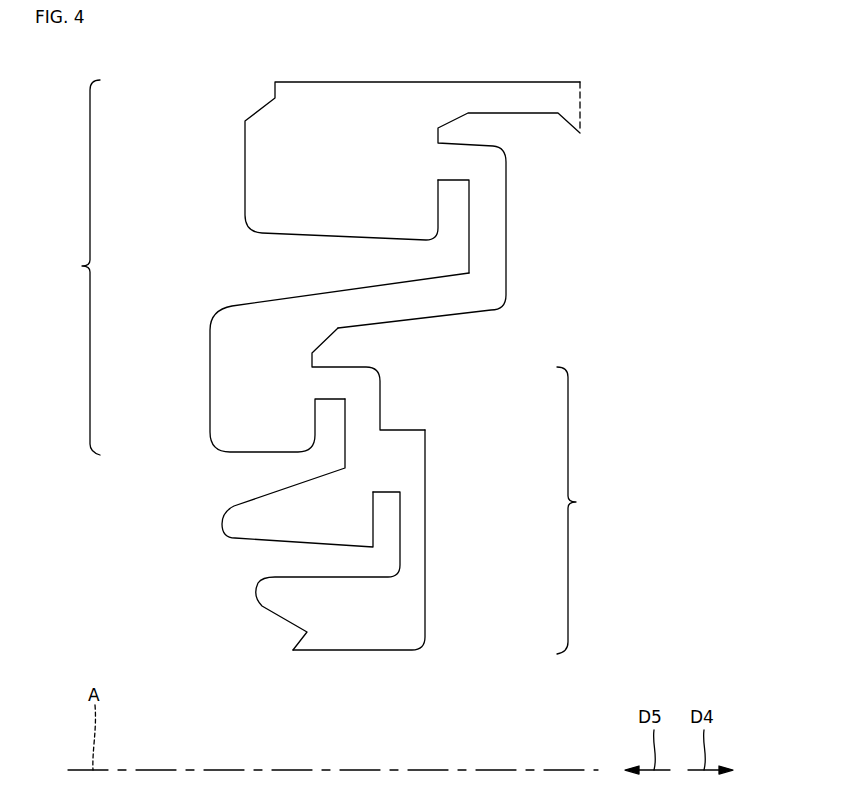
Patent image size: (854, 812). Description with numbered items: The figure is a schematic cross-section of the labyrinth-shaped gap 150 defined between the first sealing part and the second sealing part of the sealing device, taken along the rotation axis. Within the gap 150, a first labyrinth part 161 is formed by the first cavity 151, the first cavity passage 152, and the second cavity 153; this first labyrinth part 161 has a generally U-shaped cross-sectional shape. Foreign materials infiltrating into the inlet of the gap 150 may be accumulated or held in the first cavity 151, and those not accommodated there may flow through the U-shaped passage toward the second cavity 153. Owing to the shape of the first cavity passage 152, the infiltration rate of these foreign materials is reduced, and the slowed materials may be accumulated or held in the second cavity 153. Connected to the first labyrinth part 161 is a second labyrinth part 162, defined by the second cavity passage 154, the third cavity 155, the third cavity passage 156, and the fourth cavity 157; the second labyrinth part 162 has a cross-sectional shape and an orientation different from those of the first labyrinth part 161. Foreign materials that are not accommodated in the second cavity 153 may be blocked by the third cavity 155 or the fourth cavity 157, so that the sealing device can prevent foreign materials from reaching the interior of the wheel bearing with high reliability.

The labyrinth-shaped gap 150 is at (408, 353).
The first cavity 151 is at (260, 166).
The first cavity passage 152 is at (490, 223).
The second cavity 153 is at (227, 384).
The second cavity passage 154 is at (365, 408).
The third cavity 155 is at (237, 517).
The third cavity passage 156 is at (417, 533).
The fourth cavity 157 is at (263, 592).
The first labyrinth part 161 is at (71, 267).
The second labyrinth part 162 is at (587, 510).